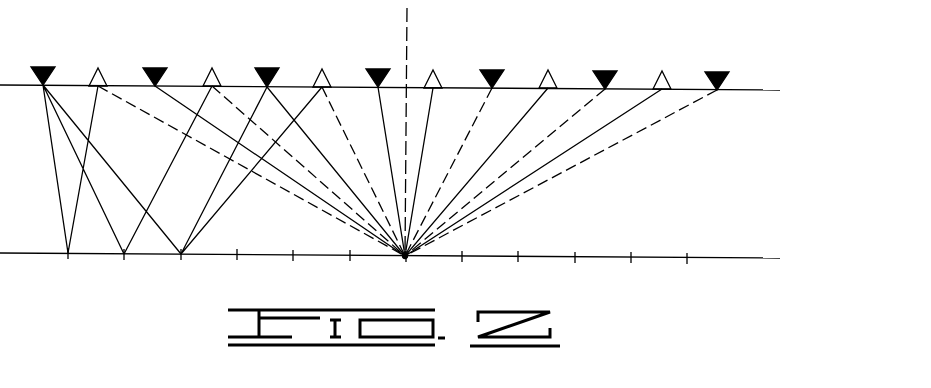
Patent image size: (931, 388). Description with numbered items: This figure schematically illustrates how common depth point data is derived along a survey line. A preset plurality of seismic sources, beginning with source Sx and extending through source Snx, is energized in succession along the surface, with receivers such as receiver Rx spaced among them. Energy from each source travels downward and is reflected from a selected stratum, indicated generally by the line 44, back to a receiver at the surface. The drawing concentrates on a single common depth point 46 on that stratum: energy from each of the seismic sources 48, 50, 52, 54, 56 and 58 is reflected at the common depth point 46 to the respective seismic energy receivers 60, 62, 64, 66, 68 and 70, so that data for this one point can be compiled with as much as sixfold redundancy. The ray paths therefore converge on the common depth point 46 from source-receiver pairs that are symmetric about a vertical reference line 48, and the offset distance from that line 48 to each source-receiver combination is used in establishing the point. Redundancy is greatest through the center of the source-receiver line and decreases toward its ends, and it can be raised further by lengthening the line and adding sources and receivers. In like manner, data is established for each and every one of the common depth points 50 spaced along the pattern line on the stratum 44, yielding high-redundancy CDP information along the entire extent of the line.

The line indicating selected stratum 44 is at (537, 257).
The common depth point 46 is at (405, 258).
The seismic source 48 is at (411, 20).
The seismic source / common depth points 50 is at (66, 255).
The seismic source 52 is at (378, 68).
The seismic source 54 is at (492, 69).
The seismic source 56 is at (605, 70).
The seismic source 58 is at (720, 77).
The seismic energy receiver 60 is at (661, 72).
The seismic energy receiver 62 is at (548, 69).
The seismic energy receiver 64 is at (433, 69).
The seismic energy receiver 66 is at (322, 70).
The seismic energy receiver 68 is at (211, 68).
The seismic energy receiver 70 is at (100, 88).
The seismic source Sx is at (42, 64).
The seismic receiver Rx is at (97, 65).
The seismic source Snx is at (720, 70).